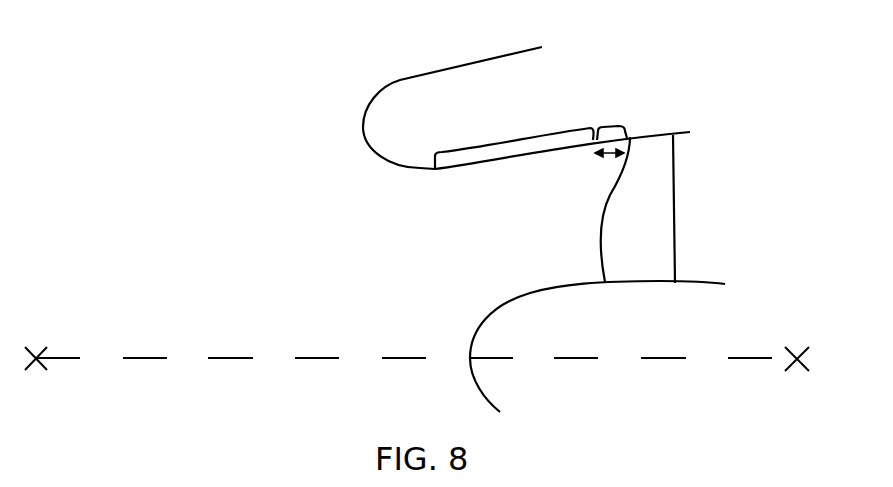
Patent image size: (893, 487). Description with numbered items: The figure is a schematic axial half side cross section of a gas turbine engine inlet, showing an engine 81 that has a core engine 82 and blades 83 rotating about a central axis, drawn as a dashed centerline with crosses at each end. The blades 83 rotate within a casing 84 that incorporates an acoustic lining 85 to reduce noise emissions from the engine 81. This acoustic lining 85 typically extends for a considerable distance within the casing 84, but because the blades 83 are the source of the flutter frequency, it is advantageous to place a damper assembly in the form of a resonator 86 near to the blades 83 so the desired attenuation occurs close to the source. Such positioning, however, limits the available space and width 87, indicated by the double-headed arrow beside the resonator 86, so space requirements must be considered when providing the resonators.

The engine 81 is at (397, 307).
The core engine 82 is at (530, 310).
The blades 83 is at (655, 215).
The casing 84 is at (448, 96).
The acoustic lining 85 is at (462, 163).
The resonator 86 is at (611, 127).
The width 87 is at (612, 157).